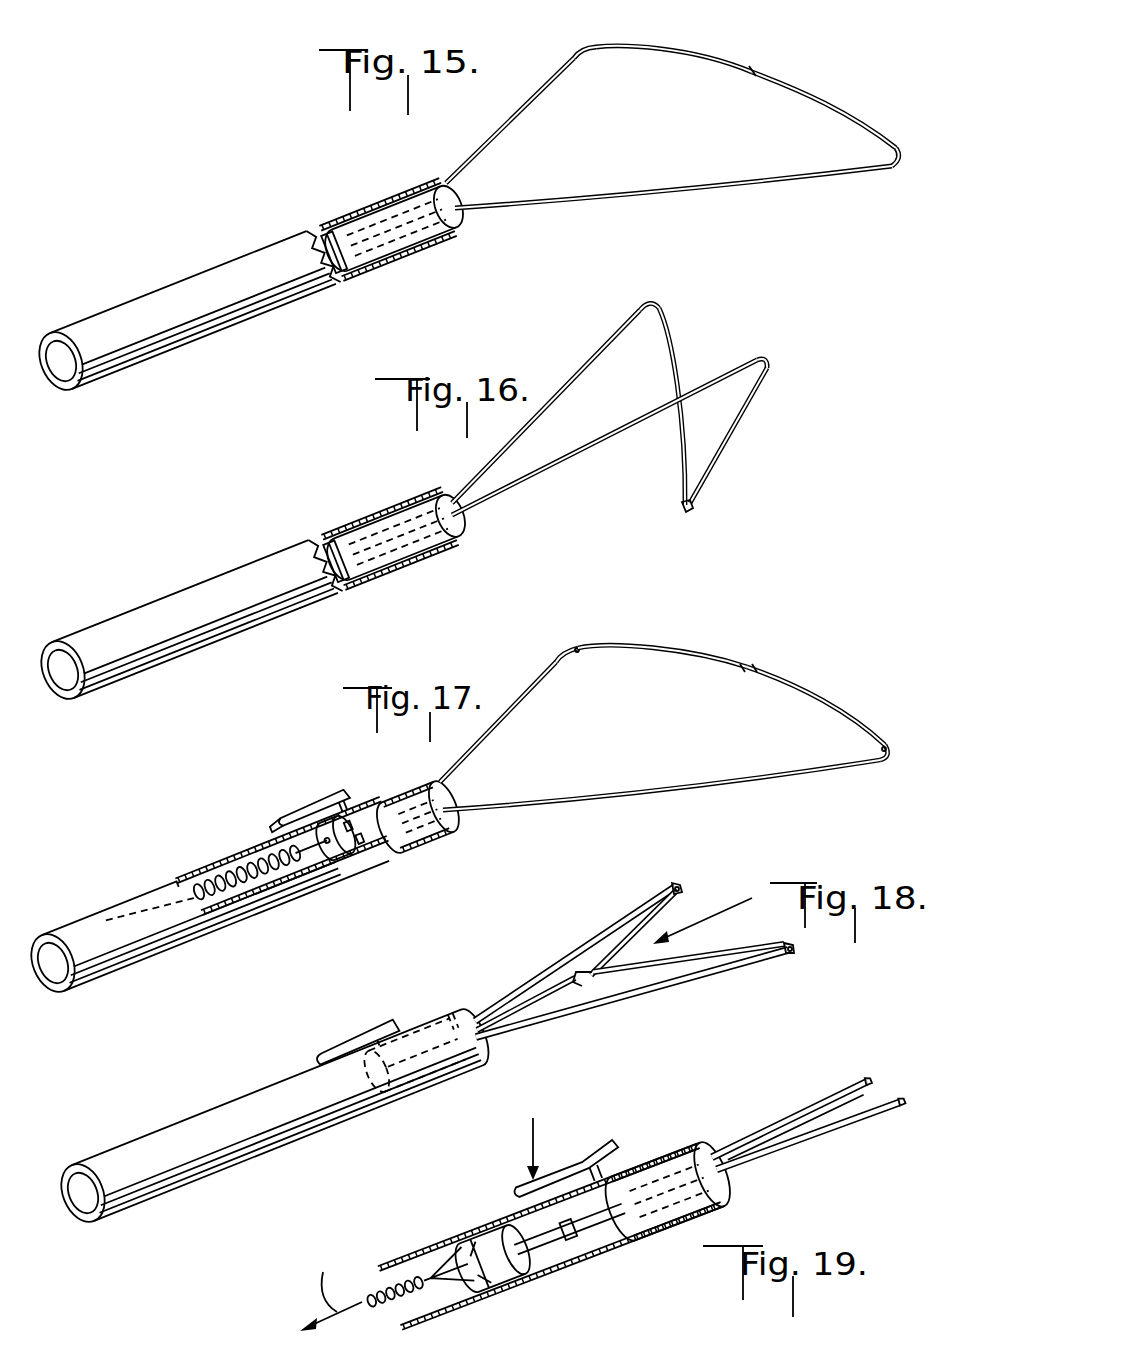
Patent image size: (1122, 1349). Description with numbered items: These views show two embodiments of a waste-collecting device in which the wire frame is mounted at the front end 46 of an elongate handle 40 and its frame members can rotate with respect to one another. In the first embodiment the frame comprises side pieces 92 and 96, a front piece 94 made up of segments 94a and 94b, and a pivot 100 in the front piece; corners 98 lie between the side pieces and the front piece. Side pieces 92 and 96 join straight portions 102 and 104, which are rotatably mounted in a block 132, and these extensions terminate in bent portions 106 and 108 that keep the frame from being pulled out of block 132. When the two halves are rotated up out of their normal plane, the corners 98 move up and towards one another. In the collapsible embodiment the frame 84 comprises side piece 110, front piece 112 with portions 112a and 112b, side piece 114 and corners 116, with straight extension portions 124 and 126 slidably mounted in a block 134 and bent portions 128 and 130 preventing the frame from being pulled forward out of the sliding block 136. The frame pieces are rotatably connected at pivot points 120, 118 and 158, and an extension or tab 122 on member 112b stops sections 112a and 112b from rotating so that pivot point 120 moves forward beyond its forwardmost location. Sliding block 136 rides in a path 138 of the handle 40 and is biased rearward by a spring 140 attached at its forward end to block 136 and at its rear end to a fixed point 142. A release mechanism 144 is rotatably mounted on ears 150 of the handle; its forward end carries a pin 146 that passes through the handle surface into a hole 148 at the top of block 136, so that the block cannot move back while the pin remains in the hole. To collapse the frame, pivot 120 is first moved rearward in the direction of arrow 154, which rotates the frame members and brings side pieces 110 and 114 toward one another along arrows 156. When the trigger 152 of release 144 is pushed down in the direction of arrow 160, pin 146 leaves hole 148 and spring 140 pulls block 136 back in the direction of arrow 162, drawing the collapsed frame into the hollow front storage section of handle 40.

In FIG. 15, the handle 40 is at (150, 298).
In FIG. 16, the handle 40 is at (185, 621).
In FIG. 17, the handle 40 is at (205, 865).
In FIG. 18, the handle 40 is at (257, 1108).
In FIG. 19, the handle 40 is at (417, 1256).
In FIG. 15, the front end 46 is at (401, 219).
In FIG. 16, the front end 46 is at (395, 532).
In FIG. 19, the front end 46 is at (667, 1192).
In FIG. 17, the wire loop 84 is at (684, 710).
In FIG. 15, the side piece 92 is at (528, 100).
In FIG. 16, the side piece 92 is at (582, 365).
In FIG. 15, the front piece 94 is at (746, 74).
In FIG. 15, the segment 94a is at (650, 50).
In FIG. 15, the segment 94b is at (810, 88).
In FIG. 15, the side piece 96 is at (727, 182).
In FIG. 16, the side piece 96 is at (605, 432).
In FIG. 15, the corners 98 is at (577, 52).
In FIG. 16, the corners 98 is at (646, 300).
In FIG. 15, the pivot 100 is at (755, 74).
In FIG. 16, the pivot 100 is at (694, 508).
In FIG. 15, the straight portion 102 is at (368, 192).
In FIG. 16, the straight portion 102 is at (396, 538).
In FIG. 15, the straight portion 104 is at (432, 243).
In FIG. 15, the bent portion 106 is at (300, 232).
In FIG. 16, the bent portion 106 is at (306, 540).
In FIG. 15, the bent portion 108 is at (345, 270).
In FIG. 16, the bent portion 108 is at (338, 580).
In FIG. 17, the side piece 110 is at (535, 686).
In FIG. 18, the side piece 110 is at (578, 953).
In FIG. 19, the side piece 110 is at (738, 1142).
In FIG. 17, the front piece 112 is at (739, 679).
In FIG. 17, the portion 112a is at (670, 652).
In FIG. 17, the portion 112b is at (825, 694).
In FIG. 17, the side piece 114 is at (707, 783).
In FIG. 18, the side piece 114 is at (605, 1000).
In FIG. 19, the side piece 114 is at (757, 1158).
In FIG. 17, the corners 116 is at (558, 655).
In FIG. 17, the pivot points 118 is at (578, 648).
In FIG. 17, the pivot point 120 is at (770, 668).
In FIG. 18, the pivot point 120 is at (580, 982).
In FIG. 17, the extension or tab 122 is at (745, 675).
In FIG. 17, the straight extension portion 124 is at (385, 782).
In FIG. 17, the straight extension portion 126 is at (440, 838).
In FIG. 17, the bent portion 128 is at (353, 827).
In FIG. 17, the bent portion 130 is at (335, 870).
In FIG. 15, the block 132 is at (401, 195).
In FIG. 16, the block 132 is at (388, 503).
In FIG. 17, the block 134 is at (426, 797).
In FIG. 17, the sliding block 136 is at (350, 872).
In FIG. 18, the sliding block 136 is at (428, 1100).
In FIG. 19, the sliding block 136 is at (507, 1267).
In FIG. 17, the path 138 is at (256, 888).
In FIG. 17, the spring 140 is at (208, 900).
In FIG. 19, the spring 140 is at (380, 1277).
In FIG. 17, the fixed point 142 is at (128, 957).
In FIG. 17, the release mechanism 144 is at (337, 795).
In FIG. 18, the release mechanism 144 is at (385, 1038).
In FIG. 17, the pin 146 is at (385, 835).
In FIG. 19, the pin 146 is at (615, 1155).
In FIG. 17, the hole 148 is at (370, 858).
In FIG. 19, the hole 148 is at (495, 1232).
In FIG. 17, the ears 150 is at (333, 805).
In FIG. 17, the trigger 152 is at (280, 805).
In FIG. 19, the trigger 152 is at (523, 1187).
In FIG. 18, the arrow 154 is at (722, 911).
In FIG. 18, the arrows 156 is at (664, 894).
In FIG. 18, the pivot point 158 is at (465, 1012).
In FIG. 19, the pivot point 158 is at (590, 1223).
In FIG. 19, the arrow 160 is at (530, 1141).
In FIG. 19, the arrow 162 is at (331, 1291).